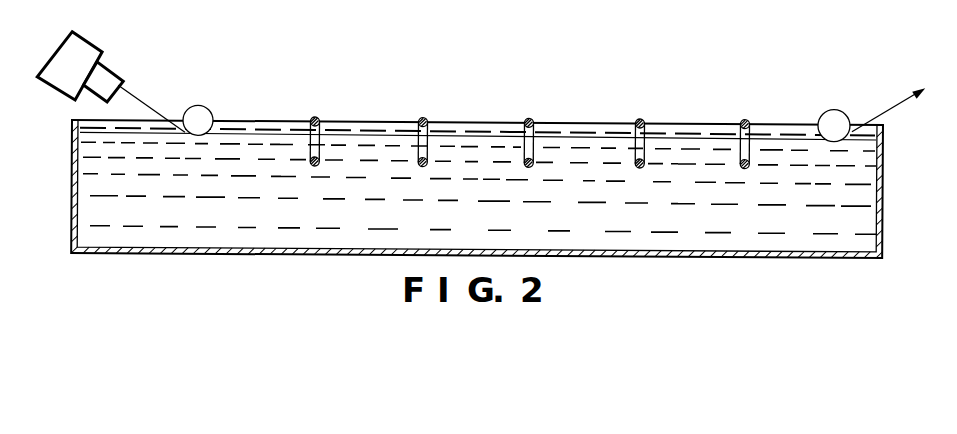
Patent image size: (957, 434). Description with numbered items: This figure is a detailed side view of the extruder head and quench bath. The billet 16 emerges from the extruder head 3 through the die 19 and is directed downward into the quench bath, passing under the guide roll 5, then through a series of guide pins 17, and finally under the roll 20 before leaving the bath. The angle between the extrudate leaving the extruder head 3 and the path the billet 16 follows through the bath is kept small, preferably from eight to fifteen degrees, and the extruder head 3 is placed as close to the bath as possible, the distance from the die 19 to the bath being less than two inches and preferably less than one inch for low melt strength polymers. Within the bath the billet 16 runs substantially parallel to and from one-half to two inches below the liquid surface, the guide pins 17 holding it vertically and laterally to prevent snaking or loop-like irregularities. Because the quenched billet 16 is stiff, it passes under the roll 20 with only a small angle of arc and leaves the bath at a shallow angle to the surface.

The extruder head 3 is at (83, 45).
The die 19 is at (106, 77).
The billet 16 is at (137, 99).
The guide roll 5 is at (202, 105).
The guide pins 17 is at (312, 116).
The roll 20 is at (838, 106).